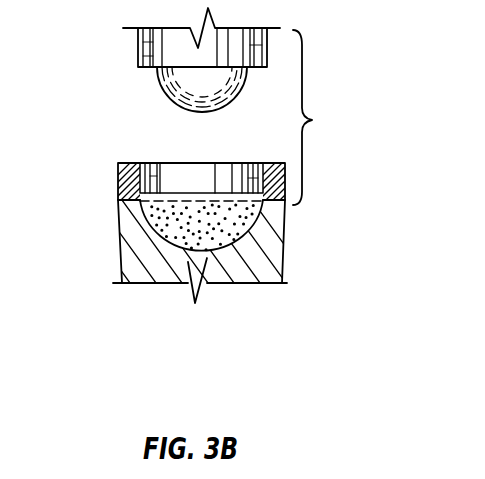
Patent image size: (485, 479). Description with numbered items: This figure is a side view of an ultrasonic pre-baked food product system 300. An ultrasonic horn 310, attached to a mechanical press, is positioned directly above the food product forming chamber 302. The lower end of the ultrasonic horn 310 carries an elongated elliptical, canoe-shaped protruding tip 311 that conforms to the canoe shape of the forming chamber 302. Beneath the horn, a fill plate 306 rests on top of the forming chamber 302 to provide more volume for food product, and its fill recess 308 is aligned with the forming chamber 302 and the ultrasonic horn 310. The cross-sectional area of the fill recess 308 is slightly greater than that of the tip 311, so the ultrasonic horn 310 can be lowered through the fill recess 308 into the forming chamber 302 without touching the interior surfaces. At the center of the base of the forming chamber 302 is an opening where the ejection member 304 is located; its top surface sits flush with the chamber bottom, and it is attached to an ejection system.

The ultrasonic pre-baked food product system 300 is at (328, 117).
The food product forming chamber 302 is at (167, 228).
The ejection member 304 is at (160, 272).
The fill plate 306 is at (118, 183).
The fill recess 308 is at (277, 163).
The ultrasonic horn 310 is at (140, 44).
The protruding tip 311 is at (160, 87).